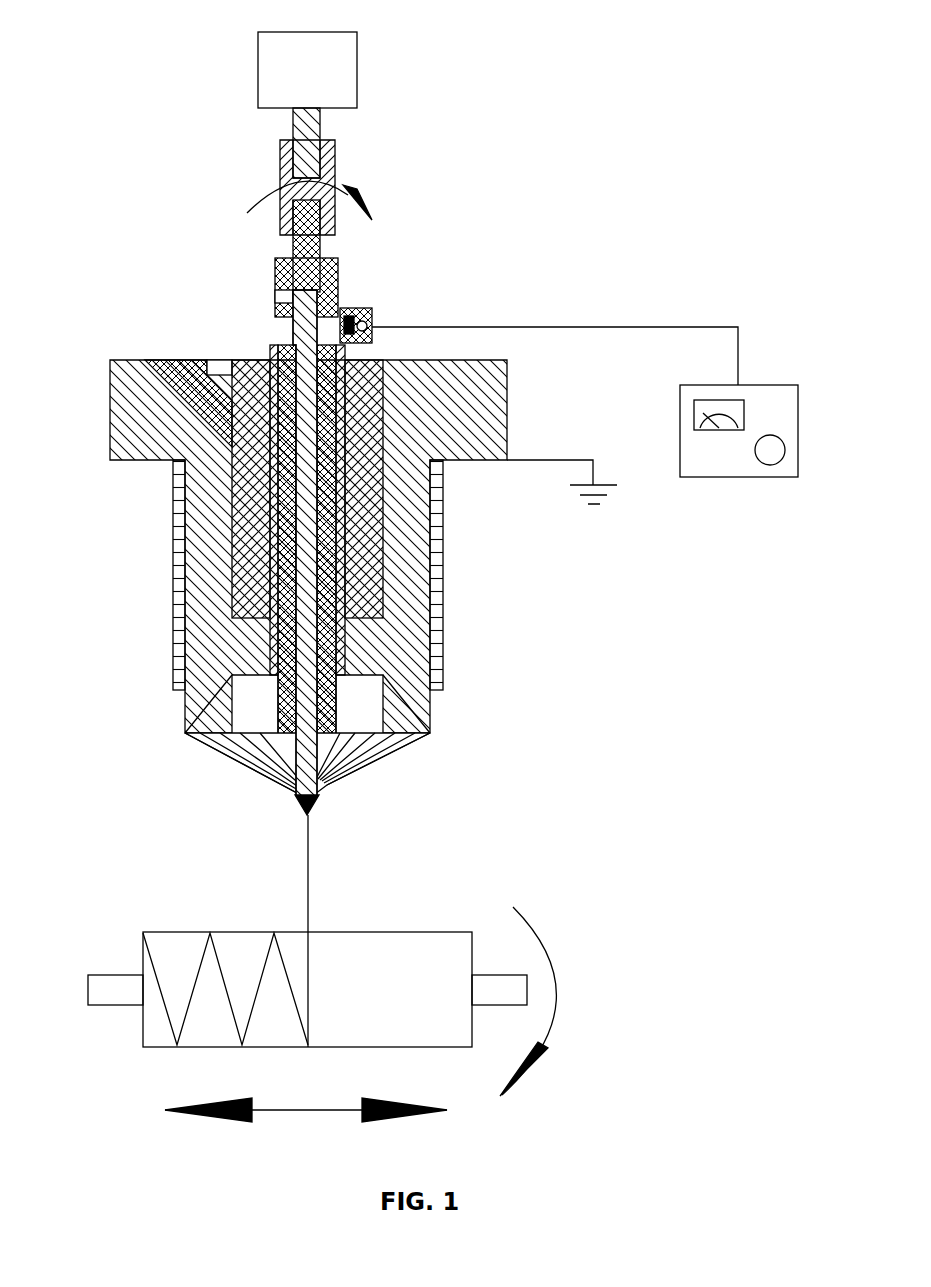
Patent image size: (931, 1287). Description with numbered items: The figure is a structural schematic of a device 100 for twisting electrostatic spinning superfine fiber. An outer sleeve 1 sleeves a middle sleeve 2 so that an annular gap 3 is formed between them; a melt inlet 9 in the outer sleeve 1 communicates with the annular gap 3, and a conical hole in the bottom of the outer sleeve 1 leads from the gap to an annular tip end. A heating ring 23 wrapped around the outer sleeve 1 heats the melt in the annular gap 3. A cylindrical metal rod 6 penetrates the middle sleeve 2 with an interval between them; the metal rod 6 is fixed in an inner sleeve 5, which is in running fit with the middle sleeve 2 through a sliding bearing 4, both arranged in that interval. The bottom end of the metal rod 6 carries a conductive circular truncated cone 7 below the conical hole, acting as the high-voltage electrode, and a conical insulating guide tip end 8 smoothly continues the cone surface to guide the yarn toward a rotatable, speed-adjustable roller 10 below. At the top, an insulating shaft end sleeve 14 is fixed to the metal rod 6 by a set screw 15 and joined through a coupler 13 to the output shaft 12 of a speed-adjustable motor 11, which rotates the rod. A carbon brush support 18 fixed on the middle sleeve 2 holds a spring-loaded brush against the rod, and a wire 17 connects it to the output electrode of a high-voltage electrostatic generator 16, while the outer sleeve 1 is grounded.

The device for twisting electrostatic spinning superfine fiber 100 is at (600, 210).
The outer sleeve 1 is at (200, 615).
The middle sleeve 2 is at (360, 500).
The annular gap 3 is at (225, 550).
The sliding bearing 4 is at (340, 572).
The inner sleeve 5 is at (335, 708).
The metal rod 6 is at (433, 635).
The circular truncated cone 7 is at (325, 785).
The guide tip end 8 is at (312, 810).
The melt inlet 9 is at (178, 385).
The roller 10 is at (401, 975).
The speed-adjustable motor 11 is at (287, 50).
The output shaft 12 is at (322, 122).
The coupler 13 is at (290, 170).
The insulating shaft end sleeve 14 is at (275, 268).
The set screw 15 is at (275, 297).
The high-voltage electrostatic generator 16 is at (742, 458).
The wire 17 is at (663, 327).
The carbon brush support 18 is at (372, 310).
The heating ring 23 is at (178, 500).